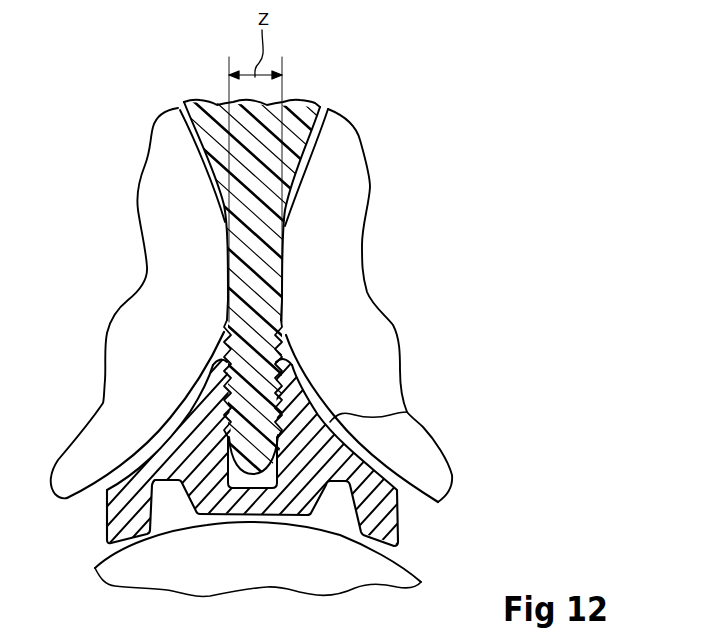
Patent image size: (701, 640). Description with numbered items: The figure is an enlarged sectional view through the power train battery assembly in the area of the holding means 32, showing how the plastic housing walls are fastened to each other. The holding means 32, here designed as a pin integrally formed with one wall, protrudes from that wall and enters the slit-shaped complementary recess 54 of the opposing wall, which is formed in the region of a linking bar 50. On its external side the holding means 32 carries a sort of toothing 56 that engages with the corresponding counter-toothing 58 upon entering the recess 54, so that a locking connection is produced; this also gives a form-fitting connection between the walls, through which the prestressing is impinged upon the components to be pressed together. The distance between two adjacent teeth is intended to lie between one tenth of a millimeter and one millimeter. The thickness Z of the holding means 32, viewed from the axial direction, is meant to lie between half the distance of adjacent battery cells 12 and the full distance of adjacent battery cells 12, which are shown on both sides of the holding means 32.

The battery cell 12 is at (151, 197).
The holding means 32 is at (255, 308).
The linking bar 50 is at (405, 414).
The recess 54 is at (252, 480).
The toothing 56 is at (227, 324).
The counter-toothing 58 is at (213, 370).